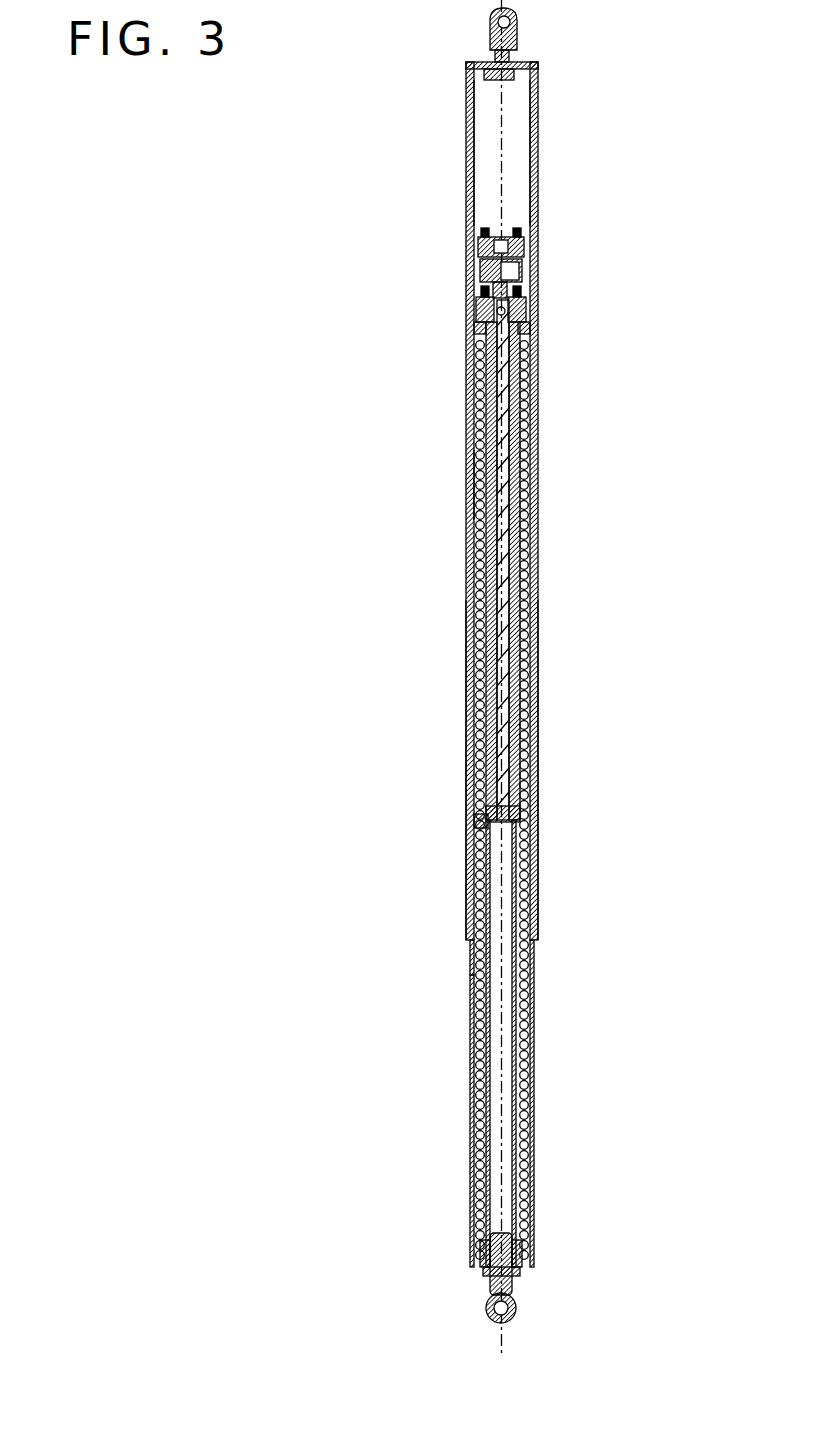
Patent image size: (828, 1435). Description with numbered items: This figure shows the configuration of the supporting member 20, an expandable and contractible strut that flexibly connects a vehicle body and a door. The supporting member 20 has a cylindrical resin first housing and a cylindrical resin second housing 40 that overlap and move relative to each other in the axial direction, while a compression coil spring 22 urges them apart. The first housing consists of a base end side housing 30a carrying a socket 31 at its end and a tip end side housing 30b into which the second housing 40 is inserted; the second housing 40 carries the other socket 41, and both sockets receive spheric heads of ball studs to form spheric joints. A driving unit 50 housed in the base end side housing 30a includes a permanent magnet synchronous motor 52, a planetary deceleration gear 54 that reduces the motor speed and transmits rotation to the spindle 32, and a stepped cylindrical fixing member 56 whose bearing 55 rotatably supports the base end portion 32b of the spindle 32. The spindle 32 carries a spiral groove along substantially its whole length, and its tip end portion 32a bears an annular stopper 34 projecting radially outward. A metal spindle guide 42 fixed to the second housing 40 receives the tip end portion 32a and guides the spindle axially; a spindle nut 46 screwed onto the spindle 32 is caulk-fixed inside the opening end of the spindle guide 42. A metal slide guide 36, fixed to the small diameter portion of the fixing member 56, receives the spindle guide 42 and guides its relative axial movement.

The supporting member 20 is at (558, 50).
The spring 22 is at (467, 538).
The base end side housing 30a is at (467, 192).
The tip end side housing 30b is at (470, 632).
The socket 31 is at (488, 33).
The spindle 32 is at (486, 432).
The tip end portion 32a is at (477, 822).
The base end portion 32b is at (488, 330).
The annular stopper 34 is at (490, 812).
The slide guide 36 is at (468, 490).
The second housing 40 is at (470, 1008).
The socket 41 is at (487, 1311).
The spindle guide 42 is at (470, 962).
The spindle nut 46 is at (500, 778).
The driving unit 50 is at (522, 501).
The motor 52 is at (515, 160).
The deceleration gear 54 is at (523, 232).
The bearing 55 is at (523, 318).
The fixing member 56 is at (473, 347).